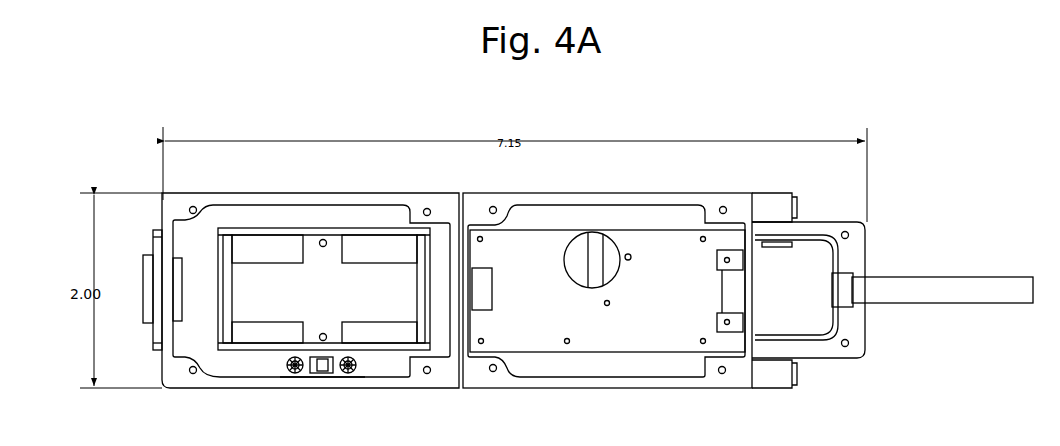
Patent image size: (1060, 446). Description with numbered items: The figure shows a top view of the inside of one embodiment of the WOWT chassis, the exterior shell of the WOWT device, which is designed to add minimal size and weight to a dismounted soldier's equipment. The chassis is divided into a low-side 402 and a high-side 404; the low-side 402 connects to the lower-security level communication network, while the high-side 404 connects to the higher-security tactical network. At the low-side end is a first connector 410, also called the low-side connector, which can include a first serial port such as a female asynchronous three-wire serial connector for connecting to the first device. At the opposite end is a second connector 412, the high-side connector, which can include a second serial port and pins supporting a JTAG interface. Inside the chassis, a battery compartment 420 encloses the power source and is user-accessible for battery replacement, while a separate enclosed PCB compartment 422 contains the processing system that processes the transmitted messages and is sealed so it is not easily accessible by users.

The low-side 402 is at (199, 178).
The high-side 404 is at (737, 180).
The first connector 410 is at (130, 268).
The second connector 412 is at (858, 253).
The battery compartment 420 is at (370, 292).
The PCB compartment 422 is at (540, 268).